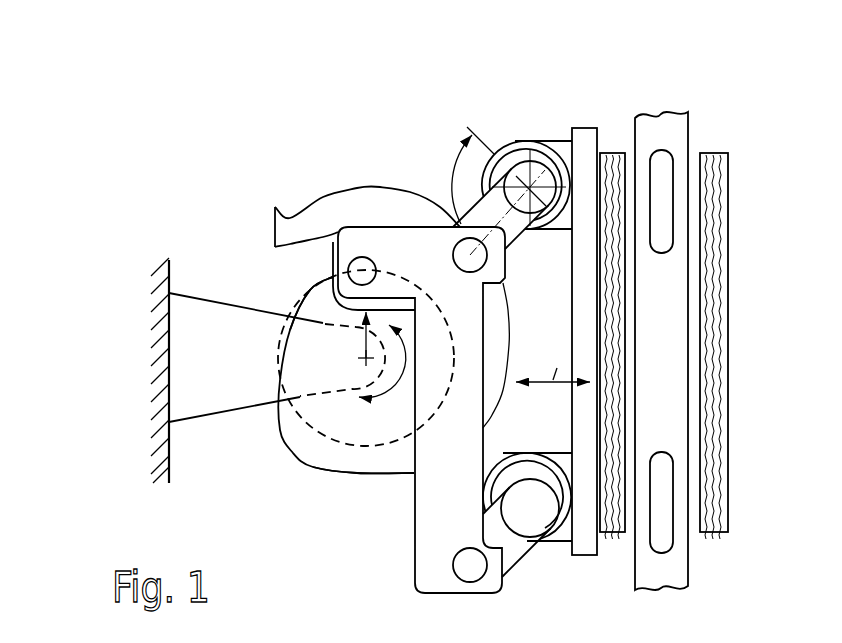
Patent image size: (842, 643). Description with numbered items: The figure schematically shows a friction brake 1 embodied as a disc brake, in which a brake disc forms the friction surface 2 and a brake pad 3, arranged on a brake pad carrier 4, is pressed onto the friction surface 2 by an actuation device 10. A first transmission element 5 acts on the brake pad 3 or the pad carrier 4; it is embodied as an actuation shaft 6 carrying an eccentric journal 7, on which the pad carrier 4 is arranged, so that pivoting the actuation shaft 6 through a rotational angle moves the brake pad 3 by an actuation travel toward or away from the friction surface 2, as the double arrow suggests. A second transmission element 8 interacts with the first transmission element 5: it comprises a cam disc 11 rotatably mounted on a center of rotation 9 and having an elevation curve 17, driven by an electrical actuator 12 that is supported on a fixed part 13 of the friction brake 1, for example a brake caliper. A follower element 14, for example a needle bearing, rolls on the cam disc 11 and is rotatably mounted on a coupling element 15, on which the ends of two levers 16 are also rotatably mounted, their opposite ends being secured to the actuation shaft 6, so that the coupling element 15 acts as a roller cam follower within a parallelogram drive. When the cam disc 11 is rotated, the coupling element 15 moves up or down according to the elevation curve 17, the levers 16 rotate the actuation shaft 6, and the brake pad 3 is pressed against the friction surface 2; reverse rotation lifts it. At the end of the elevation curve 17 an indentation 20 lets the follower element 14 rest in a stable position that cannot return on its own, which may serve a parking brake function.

The friction brake 1 is at (407, 167).
The friction surface 2 is at (668, 135).
The brake pad 3 is at (607, 187).
The brake pad carrier 4 is at (575, 150).
The first transmission element 5 is at (532, 131).
The actuation shaft 6 is at (520, 160).
The eccentric journal 7 is at (497, 152).
The second transmission element 8 is at (290, 460).
The center of rotation 9 is at (363, 360).
The actuation device 10 is at (367, 180).
The cam disc 11 is at (335, 452).
The electrical actuator 12 is at (297, 302).
The fixed part 13 is at (168, 357).
The follower element 14 is at (348, 268).
The coupling element 15 is at (435, 502).
The lever 16 is at (510, 228).
The elevation curve 17 is at (385, 477).
The indentation 20 is at (290, 210).